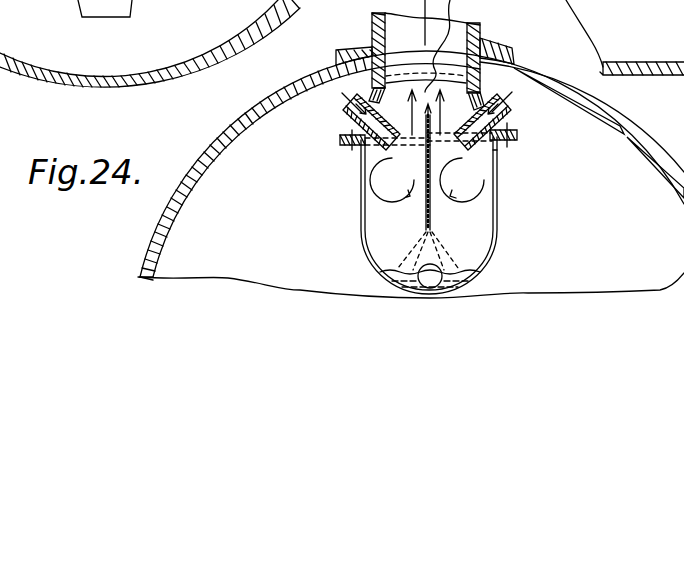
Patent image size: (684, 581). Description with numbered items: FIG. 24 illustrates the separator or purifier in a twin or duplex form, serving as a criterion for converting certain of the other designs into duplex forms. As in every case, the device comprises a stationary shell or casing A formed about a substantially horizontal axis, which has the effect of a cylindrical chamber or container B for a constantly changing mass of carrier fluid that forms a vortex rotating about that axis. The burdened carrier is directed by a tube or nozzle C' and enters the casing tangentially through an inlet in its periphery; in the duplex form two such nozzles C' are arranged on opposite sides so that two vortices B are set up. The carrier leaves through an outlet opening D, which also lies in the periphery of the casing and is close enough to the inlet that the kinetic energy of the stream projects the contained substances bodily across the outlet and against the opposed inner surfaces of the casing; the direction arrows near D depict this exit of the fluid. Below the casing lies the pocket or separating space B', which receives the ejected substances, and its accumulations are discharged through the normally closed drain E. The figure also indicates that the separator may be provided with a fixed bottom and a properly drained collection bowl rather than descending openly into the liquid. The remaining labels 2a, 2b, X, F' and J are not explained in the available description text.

The neck of dome 2a is at (453, 37).
The dome sleeve 2b is at (670, 183).
The pipe X is at (442, 46).
The tube or nozzle C' is at (422, 121).
The nozzle fittings F' is at (428, 155).
The outlet opening D is at (317, 155).
The shell or casing A is at (492, 168).
The chamber or container B is at (427, 180).
The central jet tube J is at (424, 206).
The pocket or separating space B' is at (434, 249).
The drain or opening E is at (481, 272).